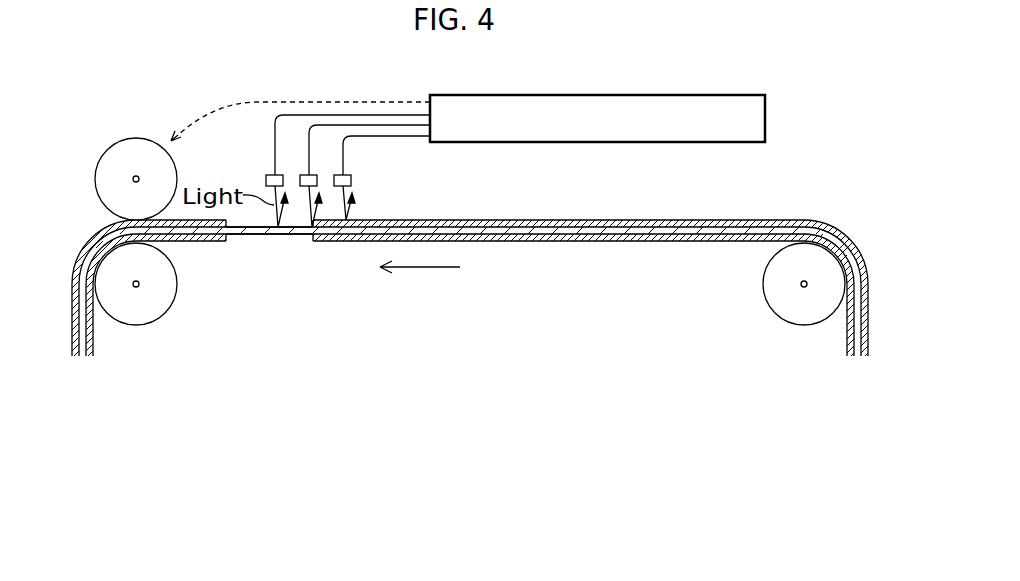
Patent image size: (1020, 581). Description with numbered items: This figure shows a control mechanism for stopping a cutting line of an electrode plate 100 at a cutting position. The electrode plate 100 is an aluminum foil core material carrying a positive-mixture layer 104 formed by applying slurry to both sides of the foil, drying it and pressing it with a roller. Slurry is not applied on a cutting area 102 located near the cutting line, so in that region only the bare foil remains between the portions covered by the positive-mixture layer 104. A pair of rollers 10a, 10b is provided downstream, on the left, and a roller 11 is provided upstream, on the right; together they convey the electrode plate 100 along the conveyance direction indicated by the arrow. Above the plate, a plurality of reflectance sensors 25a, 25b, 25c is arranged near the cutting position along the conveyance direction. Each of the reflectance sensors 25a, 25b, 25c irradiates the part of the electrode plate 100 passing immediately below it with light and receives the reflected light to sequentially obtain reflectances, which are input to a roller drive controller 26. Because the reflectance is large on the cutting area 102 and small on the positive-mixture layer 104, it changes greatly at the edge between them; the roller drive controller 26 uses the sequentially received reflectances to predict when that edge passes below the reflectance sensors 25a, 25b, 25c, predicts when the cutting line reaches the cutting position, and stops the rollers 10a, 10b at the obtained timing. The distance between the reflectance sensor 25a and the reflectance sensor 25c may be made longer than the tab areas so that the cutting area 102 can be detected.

The roller 10a is at (138, 151).
The roller 10b is at (145, 313).
The roller 11 is at (783, 308).
The reflectance sensor 25a is at (266, 177).
The reflectance sensor 25b is at (309, 174).
The reflectance sensor 25c is at (351, 178).
The roller drive controller 26 is at (702, 95).
The electrode plate 100 is at (602, 195).
The cutting area 102 is at (315, 243).
The positive-mixture layer 104 is at (496, 209).